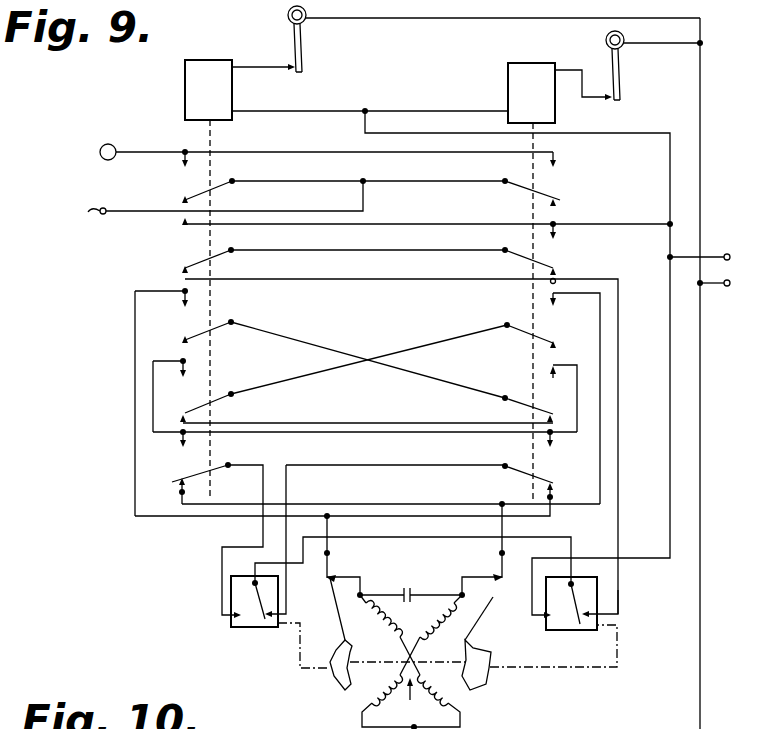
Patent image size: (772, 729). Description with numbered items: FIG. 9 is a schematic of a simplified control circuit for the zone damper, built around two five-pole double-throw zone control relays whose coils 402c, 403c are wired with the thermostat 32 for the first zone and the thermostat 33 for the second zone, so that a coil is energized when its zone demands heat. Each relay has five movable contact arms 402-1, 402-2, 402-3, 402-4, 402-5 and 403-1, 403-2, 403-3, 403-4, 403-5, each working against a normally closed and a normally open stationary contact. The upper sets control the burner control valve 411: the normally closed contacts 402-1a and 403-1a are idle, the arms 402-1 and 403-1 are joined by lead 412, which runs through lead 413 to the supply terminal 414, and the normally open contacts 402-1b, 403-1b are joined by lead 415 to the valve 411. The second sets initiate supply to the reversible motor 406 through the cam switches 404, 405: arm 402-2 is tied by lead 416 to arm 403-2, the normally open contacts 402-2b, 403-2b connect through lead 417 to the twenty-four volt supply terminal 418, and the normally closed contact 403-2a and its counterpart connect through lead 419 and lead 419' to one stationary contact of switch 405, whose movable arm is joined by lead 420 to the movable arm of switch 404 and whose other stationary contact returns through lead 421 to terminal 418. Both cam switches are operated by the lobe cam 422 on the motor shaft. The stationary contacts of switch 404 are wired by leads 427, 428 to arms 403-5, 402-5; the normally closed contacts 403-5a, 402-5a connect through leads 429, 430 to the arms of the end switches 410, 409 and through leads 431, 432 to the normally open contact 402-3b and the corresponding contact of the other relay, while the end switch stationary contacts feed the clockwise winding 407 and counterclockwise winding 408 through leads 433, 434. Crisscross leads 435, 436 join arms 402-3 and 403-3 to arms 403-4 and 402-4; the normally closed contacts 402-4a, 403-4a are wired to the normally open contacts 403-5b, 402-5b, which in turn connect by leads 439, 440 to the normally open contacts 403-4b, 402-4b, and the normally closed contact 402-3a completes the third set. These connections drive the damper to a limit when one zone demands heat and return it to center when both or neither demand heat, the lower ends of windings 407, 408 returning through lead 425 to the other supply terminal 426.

The thermostat 32 is at (300, 74).
The thermostat 33 is at (616, 101).
The relay coil 402c is at (217, 99).
The relay coil 403c is at (540, 102).
The burner control valve 411 is at (108, 144).
The lead 412 is at (406, 181).
The lead 413 is at (276, 211).
The supply terminal 414 is at (92, 220).
The lead 415 is at (312, 152).
The lead 416 is at (388, 250).
The lead 417 is at (614, 224).
The supply terminal 418 is at (720, 256).
The lead 419 is at (401, 440).
The lead 419' is at (638, 602).
The lead 420 is at (388, 538).
The lead 421 is at (669, 440).
The lobe cam 422 is at (342, 692).
The lead 425 is at (700, 412).
The supply terminal 426 is at (716, 287).
The lead 427 is at (287, 592).
The lead 428 is at (221, 577).
The lead 429 is at (390, 517).
The lead 430 is at (394, 504).
The lead 431 is at (134, 430).
The lead 432 is at (601, 394).
The lead 433 is at (470, 592).
The lead 434 is at (364, 592).
The crisscross lead 435 is at (324, 348).
The crisscross lead 436 is at (424, 348).
The lead 439 is at (577, 372).
The lead 440 is at (152, 400).
The cam switch 404 is at (266, 628).
The cam switch 405 is at (596, 631).
The reversible motor 406 is at (411, 702).
The clockwise winding 407 is at (430, 624).
The counterclockwise winding 408 is at (402, 638).
The end switch 409 is at (500, 576).
The end switch 410 is at (330, 576).
The movable contact arm 402-1 is at (218, 178).
The normally closed stationary contact 402-1a is at (184, 202).
The normally open stationary contact 402-1b is at (186, 162).
The movable contact arm 402-2 is at (210, 254).
The normally open stationary contact 402-2b is at (184, 226).
The movable contact arm 402-3 is at (212, 332).
The normally closed stationary contact 402-3a is at (186, 346).
The normally open stationary contact 402-3b is at (184, 294).
The movable contact arm 402-4 is at (210, 406).
The normally closed stationary contact 402-4a is at (186, 418).
The normally open stationary contact 402-4b is at (186, 372).
The movable contact arm 402-5 is at (204, 478).
The normally closed stationary contact 402-5a is at (186, 490).
The normally open stationary contact 402-5b is at (186, 442).
The movable contact arm 403-1 is at (532, 182).
The normally closed stationary contact 403-1a is at (554, 206).
The normally open stationary contact 403-1b is at (556, 158).
The movable contact arm 403-2 is at (546, 258).
The normally closed stationary contact 403-2a is at (556, 276).
The normally open stationary contact 403-2b is at (558, 236).
The movable contact arm 403-3 is at (546, 336).
The movable contact arm 403-4 is at (540, 410).
The normally closed stationary contact 403-4a is at (551, 419).
The normally open stationary contact 403-4b is at (552, 376).
The movable contact arm 403-5 is at (536, 478).
The normally closed stationary contact 403-5a is at (550, 492).
The normally open stationary contact 403-5b is at (553, 444).